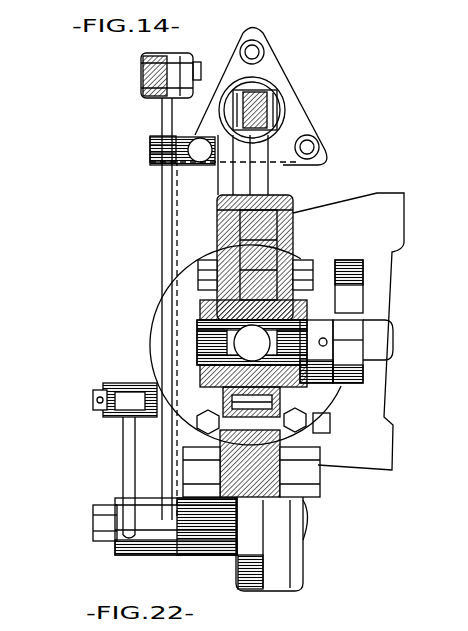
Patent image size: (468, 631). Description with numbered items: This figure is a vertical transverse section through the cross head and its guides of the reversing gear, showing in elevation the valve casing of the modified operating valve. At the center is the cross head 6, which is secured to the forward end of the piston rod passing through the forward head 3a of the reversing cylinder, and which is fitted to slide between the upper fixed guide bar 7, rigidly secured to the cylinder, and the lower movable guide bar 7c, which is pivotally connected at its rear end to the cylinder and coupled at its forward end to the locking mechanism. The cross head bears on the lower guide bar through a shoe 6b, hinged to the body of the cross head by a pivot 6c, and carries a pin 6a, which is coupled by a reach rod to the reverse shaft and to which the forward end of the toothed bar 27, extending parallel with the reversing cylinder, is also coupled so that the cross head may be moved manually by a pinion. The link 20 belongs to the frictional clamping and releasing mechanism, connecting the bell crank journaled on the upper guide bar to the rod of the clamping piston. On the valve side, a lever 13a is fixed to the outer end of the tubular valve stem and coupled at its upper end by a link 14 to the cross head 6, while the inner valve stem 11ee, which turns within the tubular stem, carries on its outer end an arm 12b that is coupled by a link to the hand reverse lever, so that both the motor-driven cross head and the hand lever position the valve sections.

The link 14 is at (175, 113).
The link 20 is at (273, 117).
The lever 13a is at (167, 235).
The upper fixed guide bar 7 is at (285, 232).
The toothed bar 27 is at (347, 295).
The cross head 6 is at (198, 313).
The cross head pin 6a is at (252, 343).
The forward head 3a is at (158, 381).
The pivot 6c is at (290, 407).
The shoe 6b is at (300, 440).
The arm 12b is at (127, 470).
The lower movable guide bar 7c is at (293, 497).
The valve stem 11ee is at (93, 525).